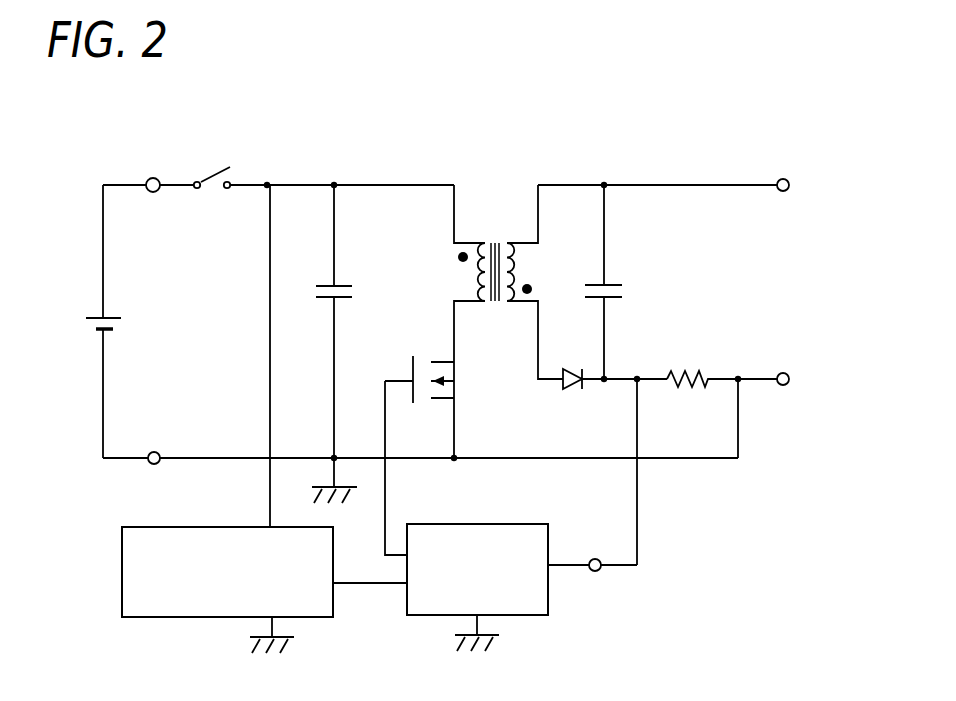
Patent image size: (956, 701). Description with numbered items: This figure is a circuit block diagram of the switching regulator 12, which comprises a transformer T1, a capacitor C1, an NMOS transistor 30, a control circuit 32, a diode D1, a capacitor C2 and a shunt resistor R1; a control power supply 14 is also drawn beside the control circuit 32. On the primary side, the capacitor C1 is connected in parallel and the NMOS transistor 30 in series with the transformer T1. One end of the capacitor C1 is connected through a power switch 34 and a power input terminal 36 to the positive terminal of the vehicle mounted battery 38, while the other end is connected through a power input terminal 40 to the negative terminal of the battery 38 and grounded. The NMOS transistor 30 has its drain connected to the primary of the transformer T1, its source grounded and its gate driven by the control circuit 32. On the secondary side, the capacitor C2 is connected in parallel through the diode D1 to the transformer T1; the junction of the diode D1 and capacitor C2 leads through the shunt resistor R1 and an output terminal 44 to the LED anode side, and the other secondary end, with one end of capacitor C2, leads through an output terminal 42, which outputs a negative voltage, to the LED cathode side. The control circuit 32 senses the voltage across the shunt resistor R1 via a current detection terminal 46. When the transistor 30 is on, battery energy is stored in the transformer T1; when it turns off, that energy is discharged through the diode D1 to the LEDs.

The switching regulator 12 is at (495, 173).
The control power supply 14 is at (219, 618).
The NMOS transistor 30 is at (411, 362).
The control circuit 32 is at (432, 617).
The power switch 34 is at (230, 167).
The power input terminal 36 is at (148, 177).
The vehicle mounted battery 38 is at (93, 316).
The power input terminal 40 is at (152, 468).
The output terminal 42 is at (788, 178).
The output terminal 44 is at (789, 373).
The current detection terminal 46 is at (597, 572).
The capacitor C1 is at (346, 286).
The capacitor C2 is at (617, 284).
The transformer T1 is at (508, 321).
The diode D1 is at (614, 394).
The shunt resistor R1 is at (722, 395).